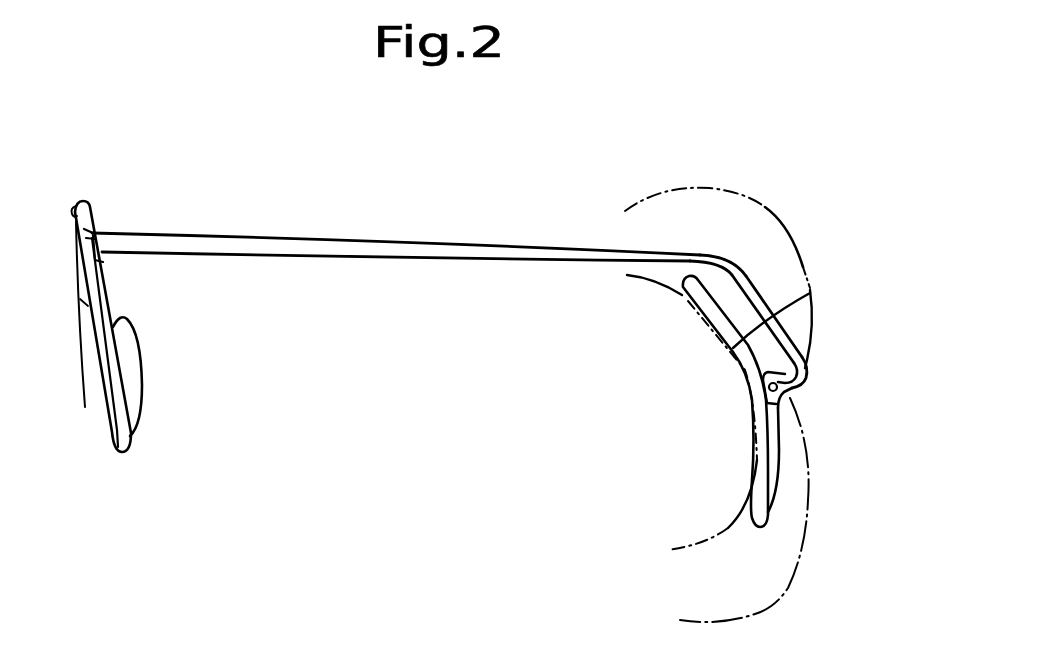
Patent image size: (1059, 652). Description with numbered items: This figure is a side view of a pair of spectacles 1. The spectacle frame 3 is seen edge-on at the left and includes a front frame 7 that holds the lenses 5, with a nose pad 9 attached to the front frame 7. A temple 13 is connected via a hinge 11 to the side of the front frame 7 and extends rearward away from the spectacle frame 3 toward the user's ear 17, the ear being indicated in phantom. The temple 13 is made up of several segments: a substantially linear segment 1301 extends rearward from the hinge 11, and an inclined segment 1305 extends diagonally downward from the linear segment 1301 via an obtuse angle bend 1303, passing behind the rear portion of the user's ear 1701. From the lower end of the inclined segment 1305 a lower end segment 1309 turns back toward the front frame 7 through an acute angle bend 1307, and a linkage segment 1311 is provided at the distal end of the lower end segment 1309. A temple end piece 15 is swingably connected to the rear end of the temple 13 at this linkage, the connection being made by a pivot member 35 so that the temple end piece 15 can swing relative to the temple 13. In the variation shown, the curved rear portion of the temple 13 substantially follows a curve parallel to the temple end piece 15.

The pair of spectacles 1 is at (327, 204).
The spectacle frame 3 is at (192, 237).
The lenses 5 is at (87, 336).
The front frame 7 is at (108, 296).
The nose pad 9 is at (130, 358).
The hinges 11 is at (95, 258).
The temples 13 is at (450, 242).
The linear segment 1301 is at (348, 262).
The obtuse angle bend 1303 is at (710, 248).
The inclined segment 1305 is at (762, 298).
The acute angle bend 1307 is at (808, 375).
The lower end segment 1309 is at (808, 390).
The linkage segment 1311 is at (790, 433).
The temple end piece 15 is at (733, 347).
The ears 17 is at (762, 207).
The rear portion of the user's ear 1701 is at (808, 284).
The pivot member 35 is at (772, 389).